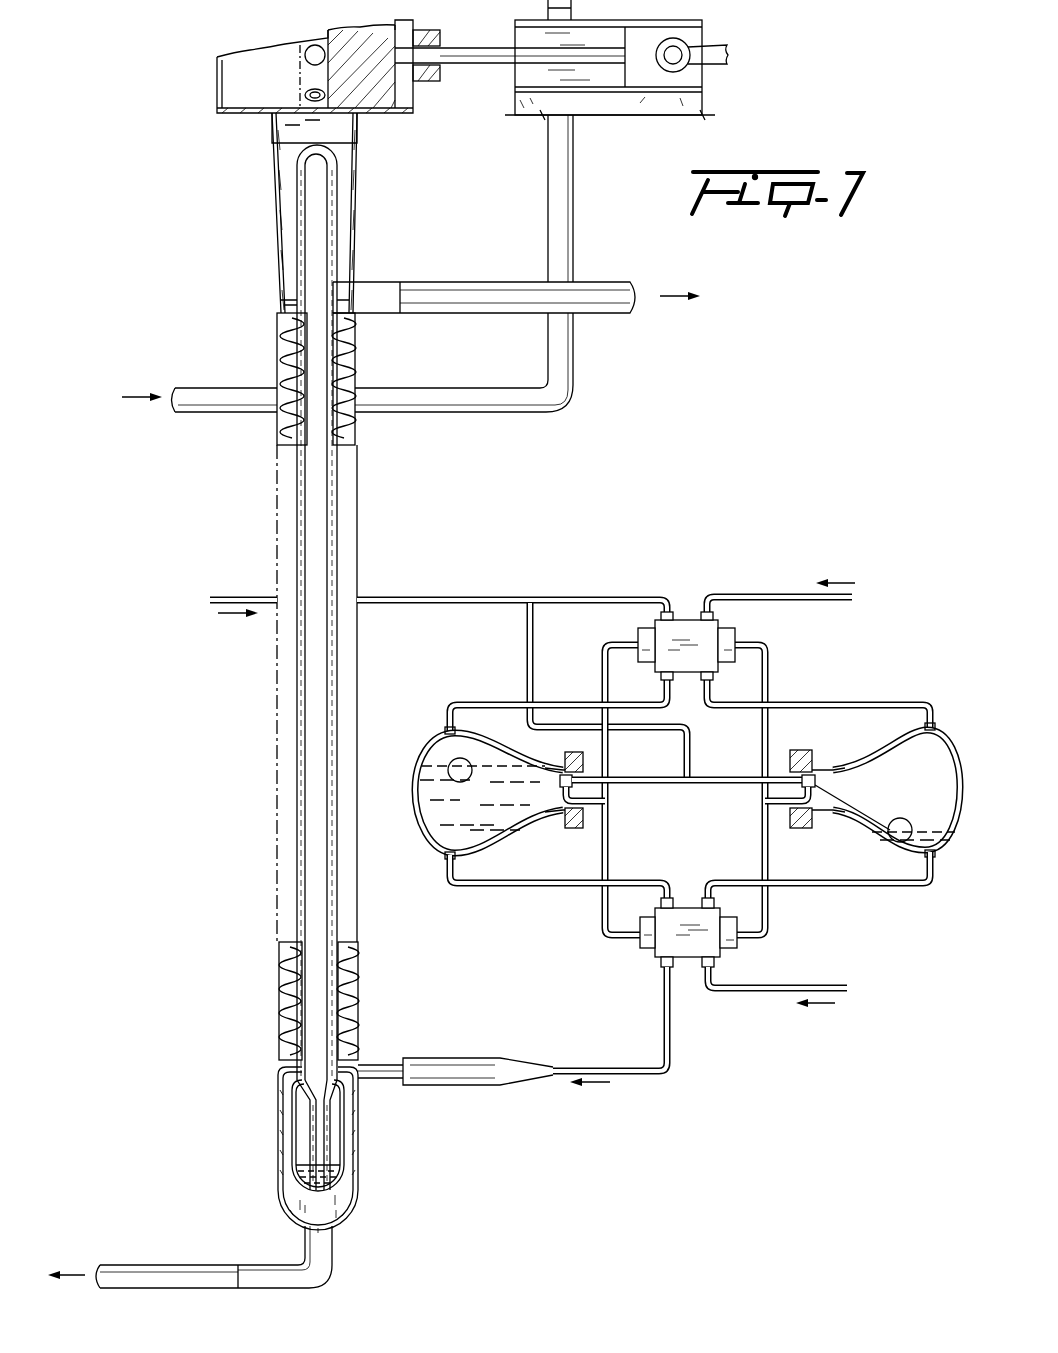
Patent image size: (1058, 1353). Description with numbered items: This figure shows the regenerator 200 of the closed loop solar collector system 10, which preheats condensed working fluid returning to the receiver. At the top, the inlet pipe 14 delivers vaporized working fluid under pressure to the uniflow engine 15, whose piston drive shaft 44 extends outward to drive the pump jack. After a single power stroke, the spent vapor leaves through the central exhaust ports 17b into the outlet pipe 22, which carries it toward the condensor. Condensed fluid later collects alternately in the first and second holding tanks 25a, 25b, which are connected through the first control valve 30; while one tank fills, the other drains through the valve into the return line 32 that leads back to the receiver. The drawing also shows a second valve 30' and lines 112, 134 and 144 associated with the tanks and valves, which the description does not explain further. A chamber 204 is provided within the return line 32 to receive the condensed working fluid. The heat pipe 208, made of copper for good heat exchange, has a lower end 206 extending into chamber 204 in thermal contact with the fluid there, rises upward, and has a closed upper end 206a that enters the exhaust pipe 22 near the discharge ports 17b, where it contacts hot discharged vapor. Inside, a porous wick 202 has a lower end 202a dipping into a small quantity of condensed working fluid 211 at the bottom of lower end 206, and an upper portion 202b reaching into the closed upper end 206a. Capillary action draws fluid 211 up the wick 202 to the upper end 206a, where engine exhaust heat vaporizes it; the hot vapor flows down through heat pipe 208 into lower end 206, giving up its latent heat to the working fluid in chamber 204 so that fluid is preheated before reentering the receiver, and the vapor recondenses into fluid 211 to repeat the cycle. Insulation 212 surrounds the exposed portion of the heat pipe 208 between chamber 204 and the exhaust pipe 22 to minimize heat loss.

The closed loop solar collector system 10 is at (642, 36).
The inlet pipe 14 is at (560, 228).
The uniflow engine 15 is at (202, 72).
The central exhaust ports 17b is at (330, 108).
The outlet pipe 22 is at (465, 283).
The first holding tank 25a is at (424, 866).
The second holding tank 25b is at (941, 705).
The first control valve 30 is at (690, 934).
The upper reversing valve 30' is at (690, 727).
The return line 32 is at (440, 1065).
The piston drive shaft 44 is at (490, 60).
The pressure line 112 is at (412, 597).
The supply line 134 is at (813, 988).
The supply line 144 is at (762, 597).
The regenerator 200 is at (190, 1004).
The wick 202 is at (283, 1122).
The lower end of wick 202a is at (325, 1150).
The upper portion of wick 202b is at (305, 535).
The chamber 204 is at (360, 1145).
The lower end of heat pipe 206 is at (345, 1120).
The closed upper end of heat pipe 206a is at (297, 215).
The heat pipe 208 is at (297, 760).
The condensed working fluid 211 is at (335, 1183).
The insulation 212 is at (290, 962).